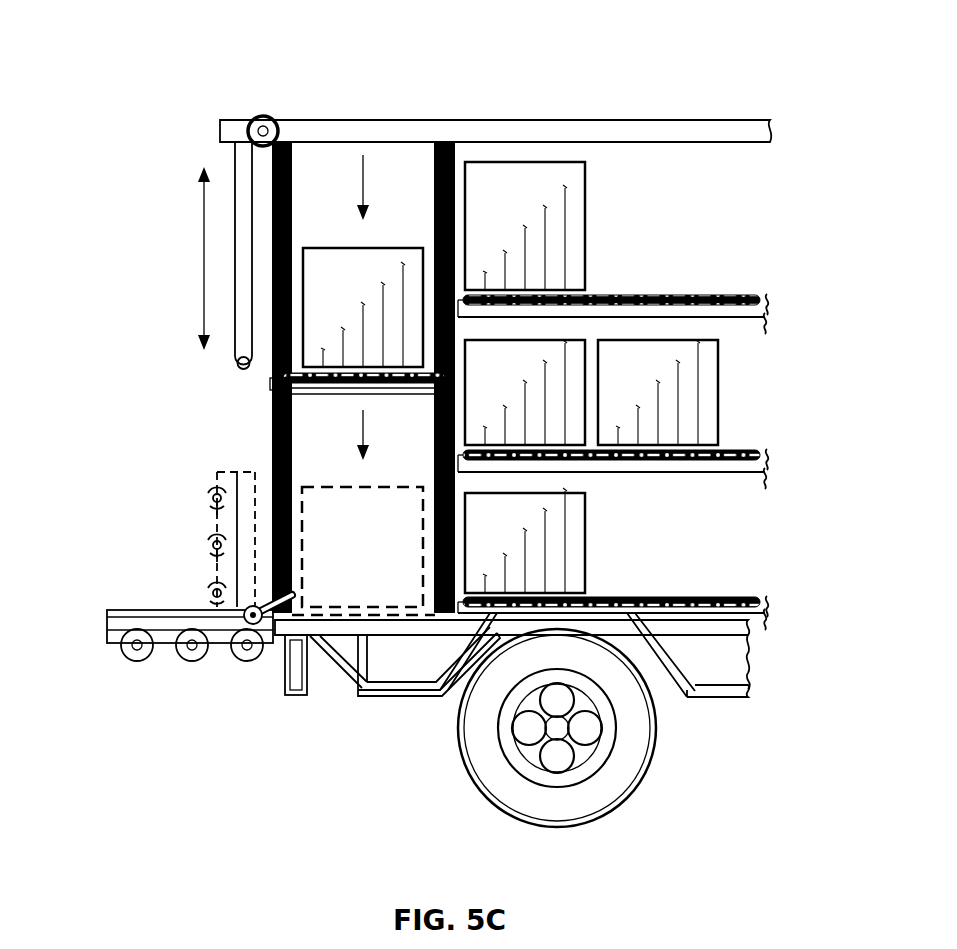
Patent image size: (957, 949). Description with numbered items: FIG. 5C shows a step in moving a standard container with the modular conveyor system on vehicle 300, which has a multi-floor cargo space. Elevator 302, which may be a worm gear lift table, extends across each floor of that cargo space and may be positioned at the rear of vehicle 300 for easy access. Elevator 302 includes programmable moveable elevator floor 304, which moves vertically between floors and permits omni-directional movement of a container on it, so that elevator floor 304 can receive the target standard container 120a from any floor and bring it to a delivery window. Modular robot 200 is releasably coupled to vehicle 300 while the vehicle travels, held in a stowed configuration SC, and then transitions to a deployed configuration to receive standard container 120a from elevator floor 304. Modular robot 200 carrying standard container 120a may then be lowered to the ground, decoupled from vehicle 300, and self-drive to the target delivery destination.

The vehicle 300 is at (176, 52).
The elevator 302 is at (233, 270).
The elevator floor 304 is at (270, 386).
The standard container 120a is at (368, 256).
The modular robot 200 is at (110, 610).
The stowed configuration SC is at (217, 512).